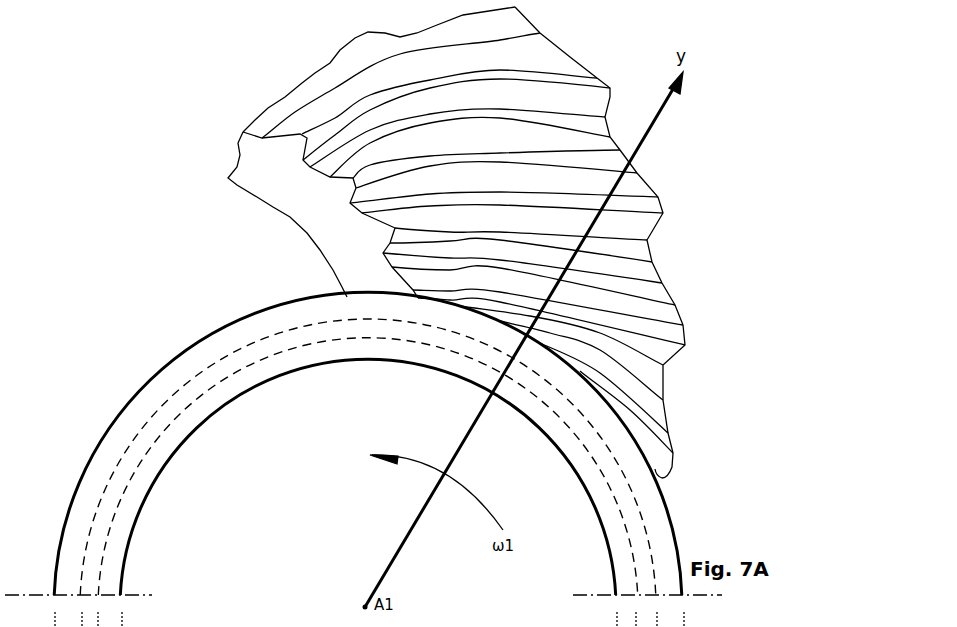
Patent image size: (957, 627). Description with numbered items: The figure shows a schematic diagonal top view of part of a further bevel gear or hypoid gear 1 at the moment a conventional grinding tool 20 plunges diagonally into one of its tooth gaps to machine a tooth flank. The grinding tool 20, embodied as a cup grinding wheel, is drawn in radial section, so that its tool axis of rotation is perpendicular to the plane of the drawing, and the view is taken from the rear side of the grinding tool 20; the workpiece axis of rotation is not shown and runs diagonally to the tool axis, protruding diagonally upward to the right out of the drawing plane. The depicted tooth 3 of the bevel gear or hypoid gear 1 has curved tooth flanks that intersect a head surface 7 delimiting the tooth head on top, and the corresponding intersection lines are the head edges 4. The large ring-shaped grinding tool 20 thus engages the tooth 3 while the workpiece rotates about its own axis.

The bevel gear or hypoid gear 1 is at (541, 33).
The tooth 3 is at (410, 288).
The head edges 4 is at (665, 470).
The head surface 7 is at (650, 447).
The grinding tool 20 is at (138, 390).